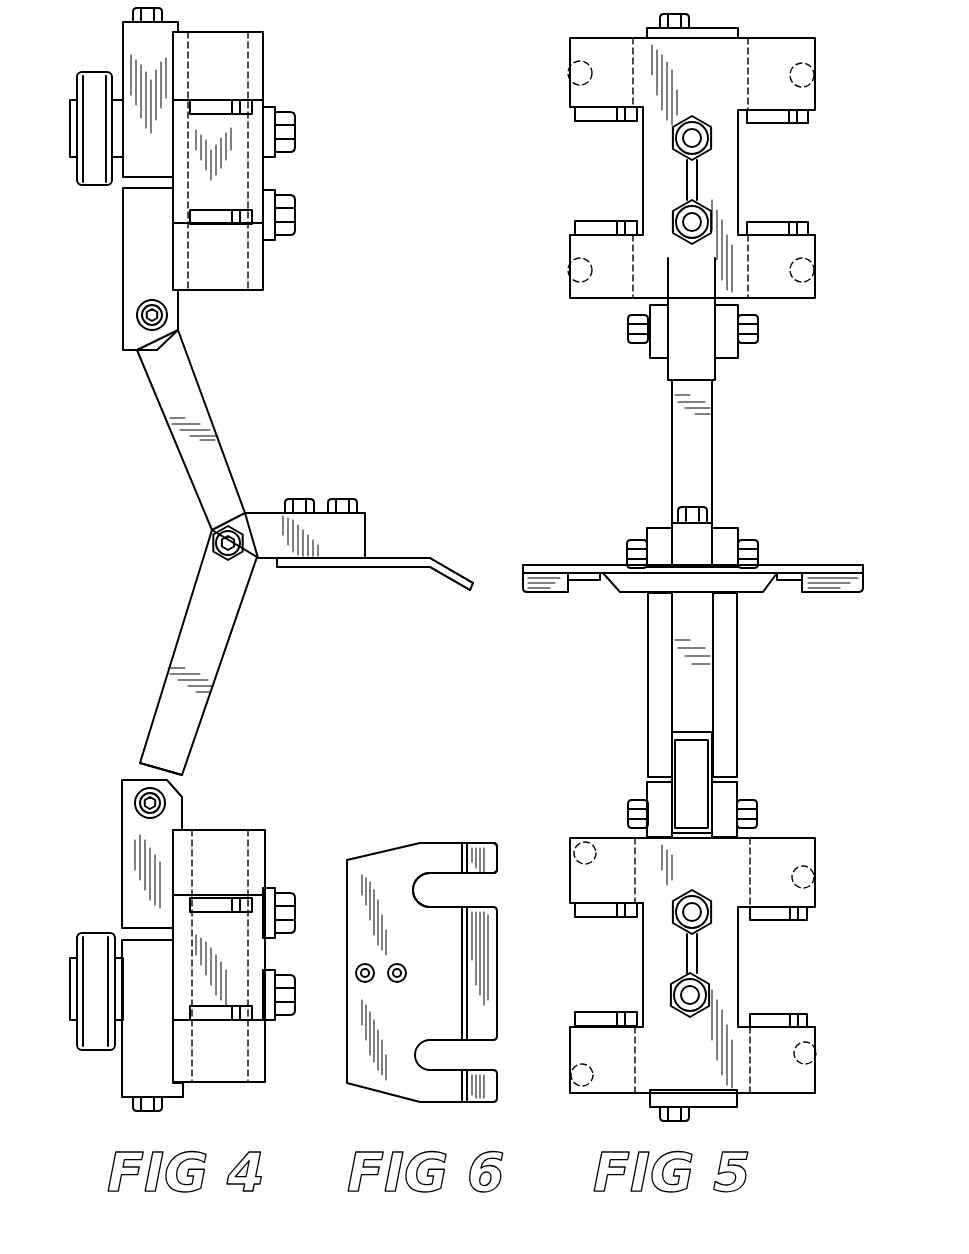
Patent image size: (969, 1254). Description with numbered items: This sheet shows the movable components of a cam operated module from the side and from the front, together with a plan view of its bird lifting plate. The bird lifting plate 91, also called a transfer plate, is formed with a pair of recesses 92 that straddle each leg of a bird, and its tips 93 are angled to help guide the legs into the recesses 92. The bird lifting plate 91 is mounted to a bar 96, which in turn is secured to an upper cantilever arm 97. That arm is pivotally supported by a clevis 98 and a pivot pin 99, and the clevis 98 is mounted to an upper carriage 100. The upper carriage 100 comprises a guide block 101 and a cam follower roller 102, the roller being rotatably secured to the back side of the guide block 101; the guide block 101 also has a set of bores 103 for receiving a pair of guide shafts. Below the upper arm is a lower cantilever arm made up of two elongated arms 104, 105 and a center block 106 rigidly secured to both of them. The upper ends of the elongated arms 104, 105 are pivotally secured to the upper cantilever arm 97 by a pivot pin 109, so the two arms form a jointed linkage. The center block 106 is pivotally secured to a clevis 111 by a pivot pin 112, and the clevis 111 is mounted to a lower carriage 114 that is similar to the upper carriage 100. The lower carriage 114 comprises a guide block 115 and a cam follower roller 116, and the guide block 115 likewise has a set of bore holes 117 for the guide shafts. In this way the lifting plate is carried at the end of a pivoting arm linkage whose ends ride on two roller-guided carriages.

In FIG. 4, the bird lifting plate 91 is at (375, 573).
In FIG. 6, the bird lifting plate 91 is at (400, 858).
In FIG. 5, the bird lifting plate 91 is at (704, 580).
In FIG. 6, the recesses 92 is at (445, 890).
In FIG. 5, the recesses 92 is at (582, 580).
In FIG. 4, the tips 93 is at (452, 584).
In FIG. 6, the tips 93 is at (478, 850).
In FIG. 5, the tips 93 is at (558, 582).
In FIG. 4, the bar 96 is at (365, 530).
In FIG. 5, the bar 96 is at (700, 532).
In FIG. 4, the upper cantilever arm 97 is at (222, 418).
In FIG. 5, the upper cantilever arm 97 is at (703, 417).
In FIG. 4, the clevis 98 is at (133, 262).
In FIG. 5, the clevis 98 is at (677, 378).
In FIG. 4, the pivot pin 99 is at (140, 318).
In FIG. 5, the pivot pin 99 is at (760, 330).
In FIG. 4, the upper carriage 100 is at (204, 176).
In FIG. 5, the upper carriage 100 is at (691, 156).
In FIG. 4, the guide block 101 is at (263, 278).
In FIG. 4, the cam follower roller 102 is at (93, 174).
In FIG. 4, the bores 103 is at (245, 52).
In FIG. 5, the bores 103 is at (568, 83).
In FIG. 5, the elongated arm 104 is at (728, 683).
In FIG. 4, the elongated arm 105 is at (187, 636).
In FIG. 5, the elongated arm 105 is at (655, 662).
In FIG. 4, the center block 106 is at (140, 767).
In FIG. 5, the center block 106 is at (697, 792).
In FIG. 4, the pivot pin 109 is at (216, 546).
In FIG. 5, the pivot pin 109 is at (760, 555).
In FIG. 4, the clevis 111 is at (130, 863).
In FIG. 5, the clevis 111 is at (658, 790).
In FIG. 4, the pivot pin 112 is at (138, 812).
In FIG. 5, the pivot pin 112 is at (757, 818).
In FIG. 4, the lower carriage 114 is at (171, 954).
In FIG. 5, the lower carriage 114 is at (732, 957).
In FIG. 4, the guide block 115 is at (262, 1030).
In FIG. 5, the guide block 115 is at (818, 855).
In FIG. 4, the cam follower roller 116 is at (92, 975).
In FIG. 4, the bore holes 117 is at (240, 852).
In FIG. 5, the bore holes 117 is at (588, 842).